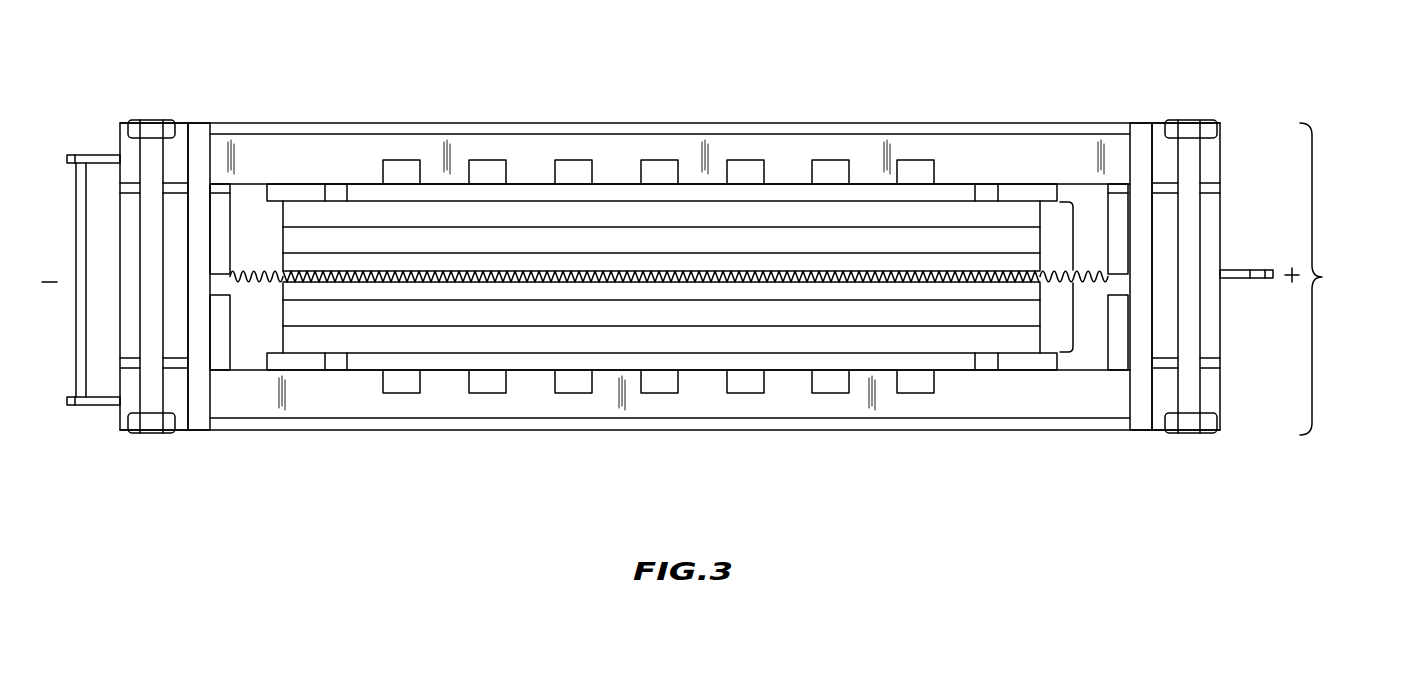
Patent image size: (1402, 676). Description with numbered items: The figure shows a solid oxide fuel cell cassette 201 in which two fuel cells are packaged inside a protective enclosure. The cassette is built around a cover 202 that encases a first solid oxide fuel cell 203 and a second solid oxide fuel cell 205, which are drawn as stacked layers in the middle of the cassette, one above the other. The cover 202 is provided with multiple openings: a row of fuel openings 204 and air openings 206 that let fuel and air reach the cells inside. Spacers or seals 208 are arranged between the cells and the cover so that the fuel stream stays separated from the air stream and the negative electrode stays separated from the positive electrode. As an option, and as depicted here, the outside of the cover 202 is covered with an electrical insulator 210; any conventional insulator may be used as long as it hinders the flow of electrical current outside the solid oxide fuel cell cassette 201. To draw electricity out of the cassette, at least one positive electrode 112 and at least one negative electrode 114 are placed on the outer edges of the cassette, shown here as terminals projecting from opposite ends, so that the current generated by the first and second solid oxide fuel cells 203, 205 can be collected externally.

The solid oxide fuel cell cassette 201 is at (1322, 277).
The cover 202 is at (720, 145).
The first solid oxide fuel cell 203 is at (1073, 237).
The fuel openings 204 is at (406, 168).
The second solid oxide fuel cell 205 is at (1073, 318).
The air openings 206 is at (201, 123).
The spacers or seals 208 is at (287, 193).
The electrical insulator 210 is at (857, 123).
The positive electrode 112 is at (1292, 290).
The negative electrode 114 is at (50, 290).